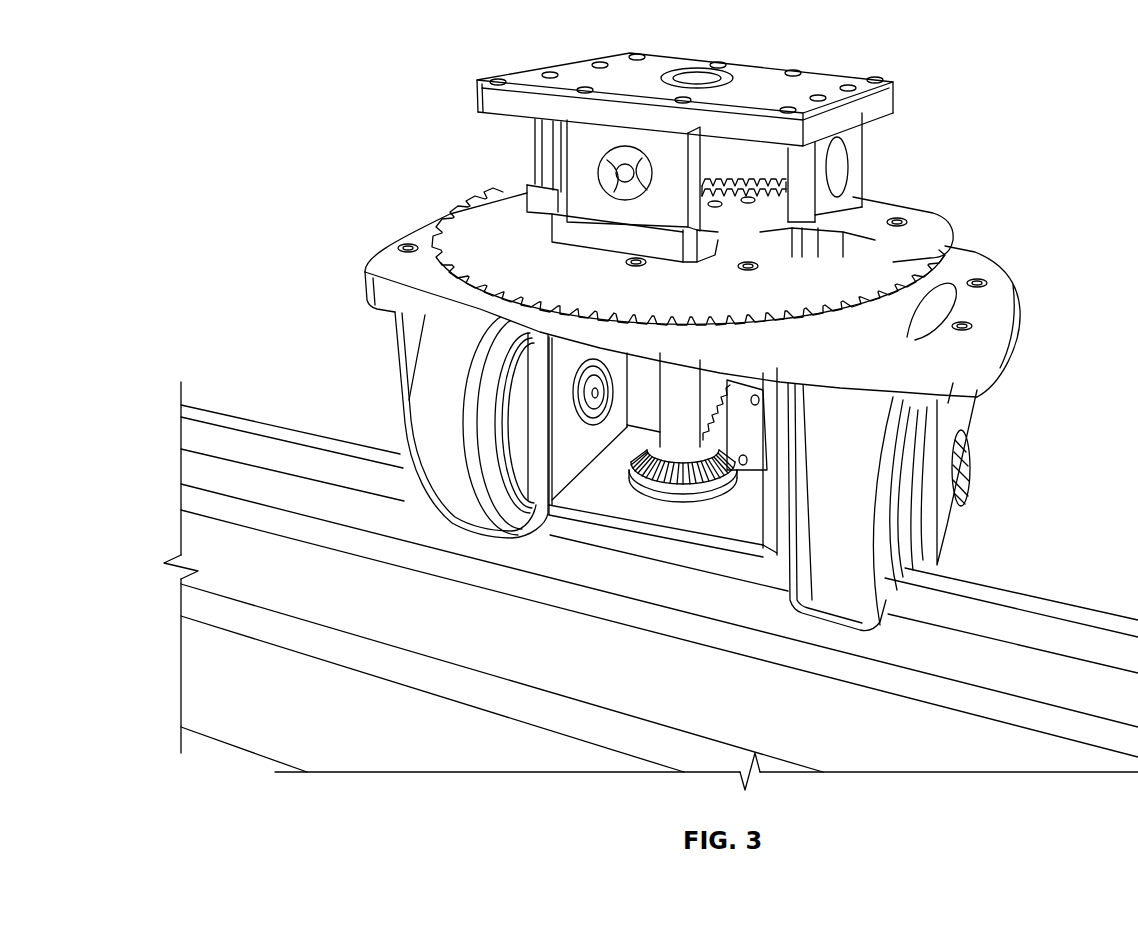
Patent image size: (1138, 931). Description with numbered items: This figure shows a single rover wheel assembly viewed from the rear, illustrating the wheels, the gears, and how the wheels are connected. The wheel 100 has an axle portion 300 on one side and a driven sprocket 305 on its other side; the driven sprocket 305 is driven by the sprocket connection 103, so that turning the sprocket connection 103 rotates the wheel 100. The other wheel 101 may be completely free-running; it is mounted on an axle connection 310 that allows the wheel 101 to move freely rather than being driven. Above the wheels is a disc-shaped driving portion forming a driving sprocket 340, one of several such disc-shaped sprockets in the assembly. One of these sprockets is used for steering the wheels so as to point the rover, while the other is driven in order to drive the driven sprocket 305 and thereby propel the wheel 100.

The wheel 100 is at (848, 590).
The wheel 101 is at (437, 372).
The sprocket connection 103 is at (660, 478).
The axle portion 300 is at (968, 458).
The driven sprocket 305 is at (748, 178).
The axle connection 310 is at (600, 398).
The driving sprocket 340 is at (893, 275).